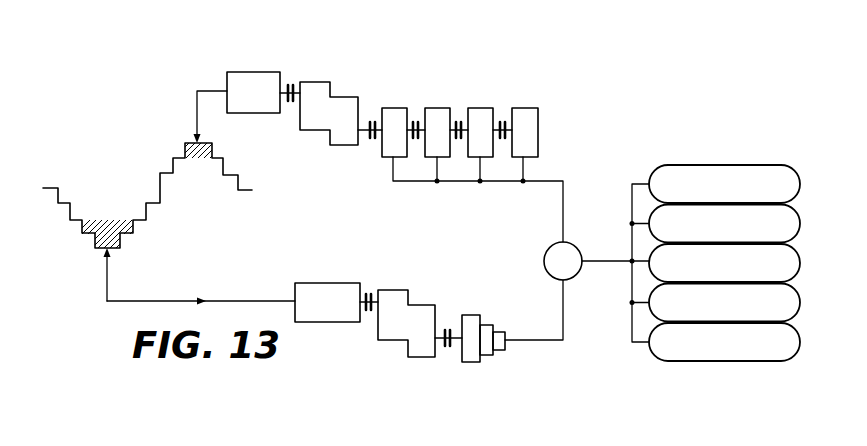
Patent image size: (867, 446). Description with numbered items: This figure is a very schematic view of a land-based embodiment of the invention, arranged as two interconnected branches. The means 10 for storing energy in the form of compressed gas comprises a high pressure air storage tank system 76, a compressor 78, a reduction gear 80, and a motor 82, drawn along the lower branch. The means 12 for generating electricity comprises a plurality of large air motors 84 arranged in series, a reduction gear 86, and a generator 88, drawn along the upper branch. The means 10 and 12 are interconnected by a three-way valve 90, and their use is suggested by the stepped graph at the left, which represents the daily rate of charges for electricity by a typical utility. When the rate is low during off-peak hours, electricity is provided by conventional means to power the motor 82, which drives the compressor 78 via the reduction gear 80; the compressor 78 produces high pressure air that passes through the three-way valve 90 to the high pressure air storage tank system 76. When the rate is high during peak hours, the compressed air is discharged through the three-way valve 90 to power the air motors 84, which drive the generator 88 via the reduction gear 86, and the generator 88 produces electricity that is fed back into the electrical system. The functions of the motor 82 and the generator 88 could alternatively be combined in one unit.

The means for storing energy in the form of compressed gas 10 is at (724, 264).
The means for generating electricity 12 is at (442, 131).
The high pressure air storage tank system 76 is at (700, 361).
The compressor 78 is at (487, 325).
The reduction gear 80 is at (412, 297).
The motor 82 is at (318, 322).
The air motors 84 is at (482, 108).
The reduction gear 86 is at (340, 97).
The generator 88 is at (241, 72).
The three-way valve 90 is at (572, 245).